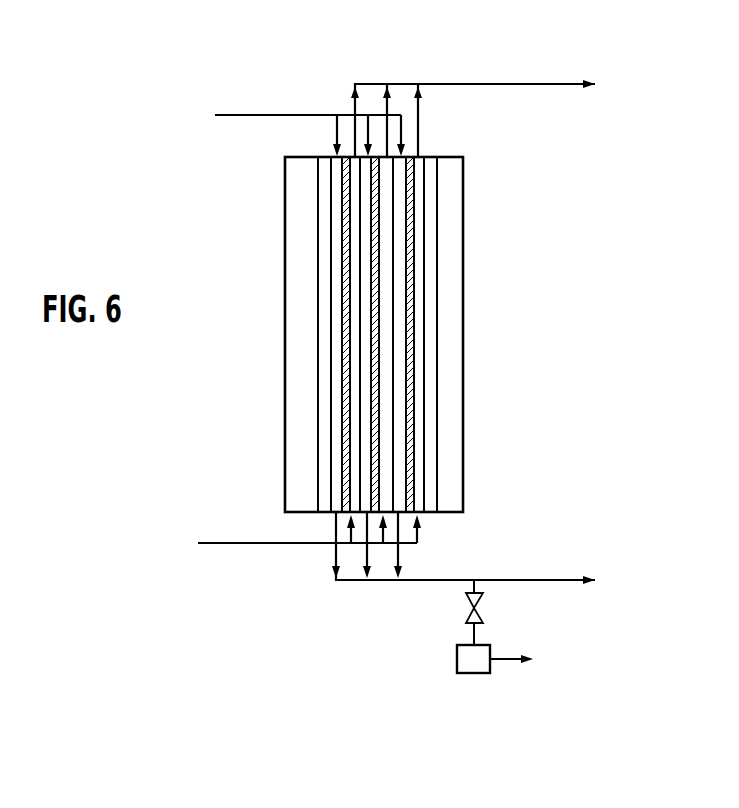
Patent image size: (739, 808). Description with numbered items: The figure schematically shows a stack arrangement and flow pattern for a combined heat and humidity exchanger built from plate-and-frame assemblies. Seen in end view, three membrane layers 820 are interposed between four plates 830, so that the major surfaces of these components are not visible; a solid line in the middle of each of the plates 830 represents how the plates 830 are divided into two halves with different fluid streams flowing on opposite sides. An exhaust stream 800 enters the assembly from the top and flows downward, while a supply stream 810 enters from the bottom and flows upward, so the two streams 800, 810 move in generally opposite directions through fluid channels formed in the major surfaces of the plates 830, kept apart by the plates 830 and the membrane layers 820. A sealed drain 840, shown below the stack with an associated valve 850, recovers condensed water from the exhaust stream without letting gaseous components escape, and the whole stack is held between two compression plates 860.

The exhaust stream 800 is at (253, 115).
The supply stream 810 is at (242, 543).
The membrane layers 820 is at (405, 210).
The plates 830 is at (418, 488).
The drain 840 is at (468, 657).
The valve 850 is at (483, 618).
The compression plates 860 is at (300, 303).